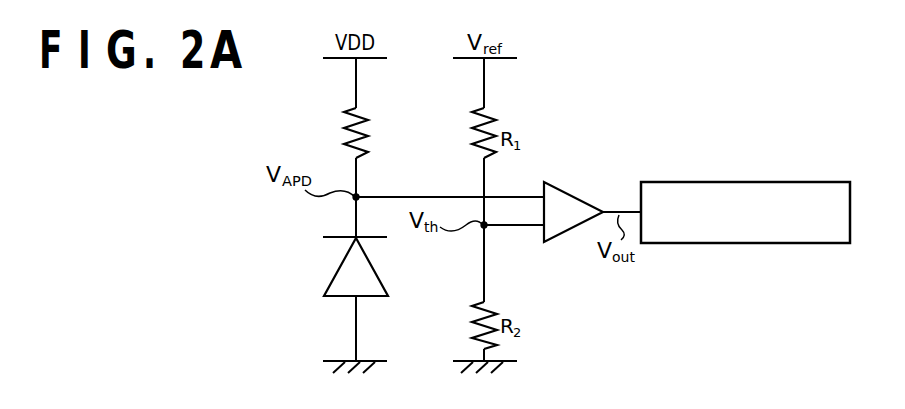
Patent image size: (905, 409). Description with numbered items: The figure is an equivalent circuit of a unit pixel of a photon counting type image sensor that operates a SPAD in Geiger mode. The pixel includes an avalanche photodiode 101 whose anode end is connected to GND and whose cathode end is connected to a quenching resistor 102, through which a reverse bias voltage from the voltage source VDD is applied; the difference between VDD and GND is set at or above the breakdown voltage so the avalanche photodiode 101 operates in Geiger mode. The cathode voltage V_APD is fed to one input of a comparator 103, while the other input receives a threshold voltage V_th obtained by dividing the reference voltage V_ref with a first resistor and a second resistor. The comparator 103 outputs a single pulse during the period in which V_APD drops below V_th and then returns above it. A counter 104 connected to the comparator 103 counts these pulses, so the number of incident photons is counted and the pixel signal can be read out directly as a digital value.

The avalanche photodiode 101 is at (336, 271).
The quenching resistor 102 is at (341, 137).
The comparator 103 is at (564, 192).
The counter 104 is at (768, 182).